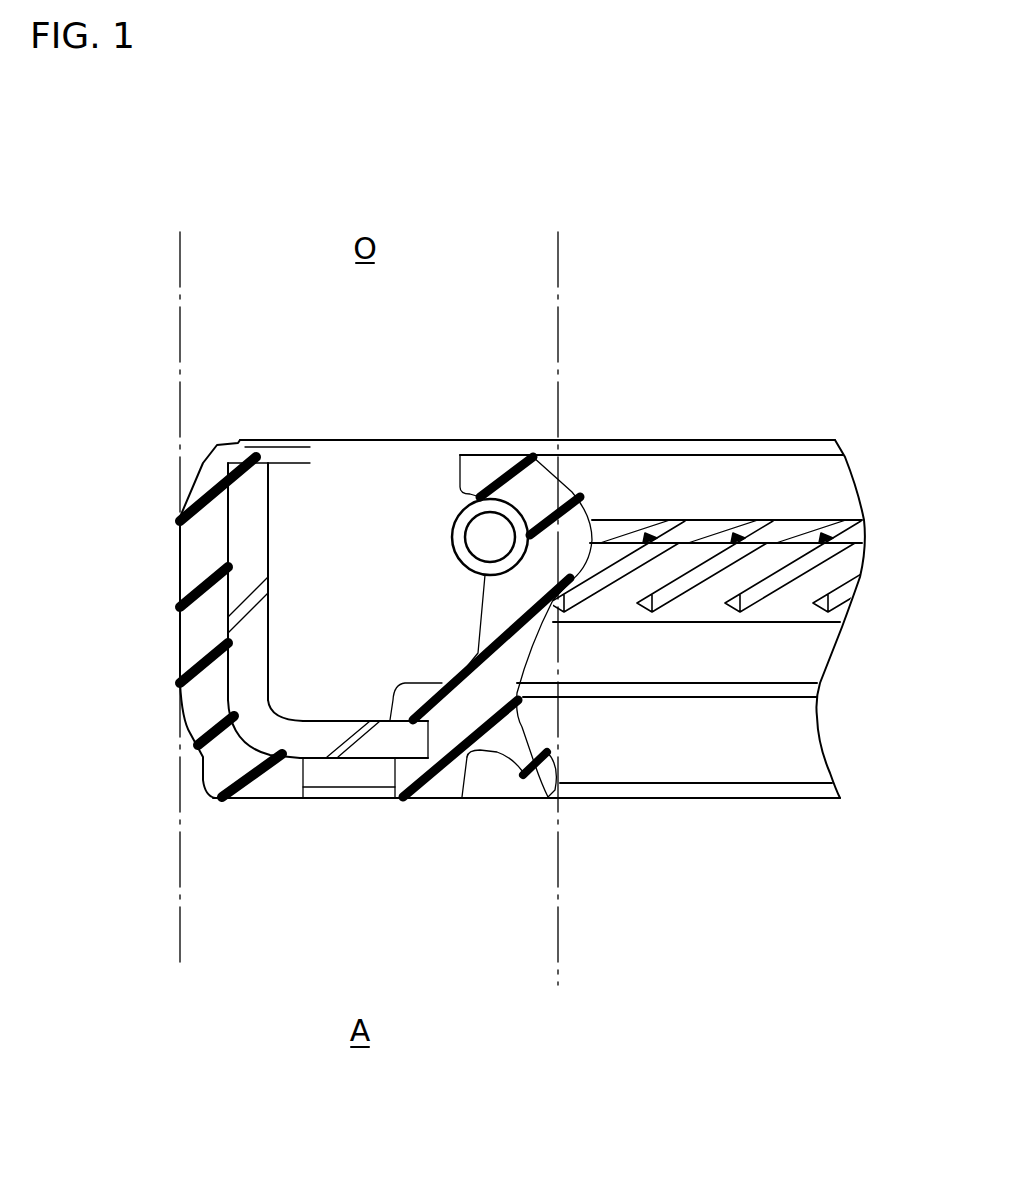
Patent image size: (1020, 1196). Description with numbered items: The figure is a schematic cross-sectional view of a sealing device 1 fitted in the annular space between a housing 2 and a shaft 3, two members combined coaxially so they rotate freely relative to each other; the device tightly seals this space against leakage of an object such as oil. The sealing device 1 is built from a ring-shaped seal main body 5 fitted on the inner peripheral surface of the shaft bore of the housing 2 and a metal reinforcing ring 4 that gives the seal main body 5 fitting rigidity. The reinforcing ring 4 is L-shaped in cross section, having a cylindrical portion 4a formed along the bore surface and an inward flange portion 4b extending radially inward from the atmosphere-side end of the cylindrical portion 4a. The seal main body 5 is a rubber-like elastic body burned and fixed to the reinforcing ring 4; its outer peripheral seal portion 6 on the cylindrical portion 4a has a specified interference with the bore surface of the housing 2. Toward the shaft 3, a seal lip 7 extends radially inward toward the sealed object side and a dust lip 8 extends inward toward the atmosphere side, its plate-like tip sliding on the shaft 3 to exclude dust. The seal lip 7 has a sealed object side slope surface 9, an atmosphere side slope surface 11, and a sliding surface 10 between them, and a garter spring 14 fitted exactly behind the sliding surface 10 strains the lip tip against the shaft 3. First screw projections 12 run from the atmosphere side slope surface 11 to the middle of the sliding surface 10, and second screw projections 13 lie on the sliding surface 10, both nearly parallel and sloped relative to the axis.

The sealing device 1 is at (486, 263).
The housing 2 is at (177, 273).
The shaft 3 is at (558, 266).
The reinforcing ring 4 is at (257, 678).
The cylindrical portion 4a is at (252, 655).
The inward flange portion 4b is at (380, 800).
The seal main body 5 is at (452, 717).
The outer peripheral seal portion 6 is at (203, 553).
The seal lip 7 is at (500, 467).
The dust lip 8 is at (527, 800).
The sealed object side slope surface 9 is at (649, 473).
The sliding surface 10 is at (682, 530).
The atmosphere side slope surface 11 is at (600, 600).
The first screw projections 12 is at (703, 600).
The second screw projections 13 is at (803, 530).
The garter spring 14 is at (453, 525).